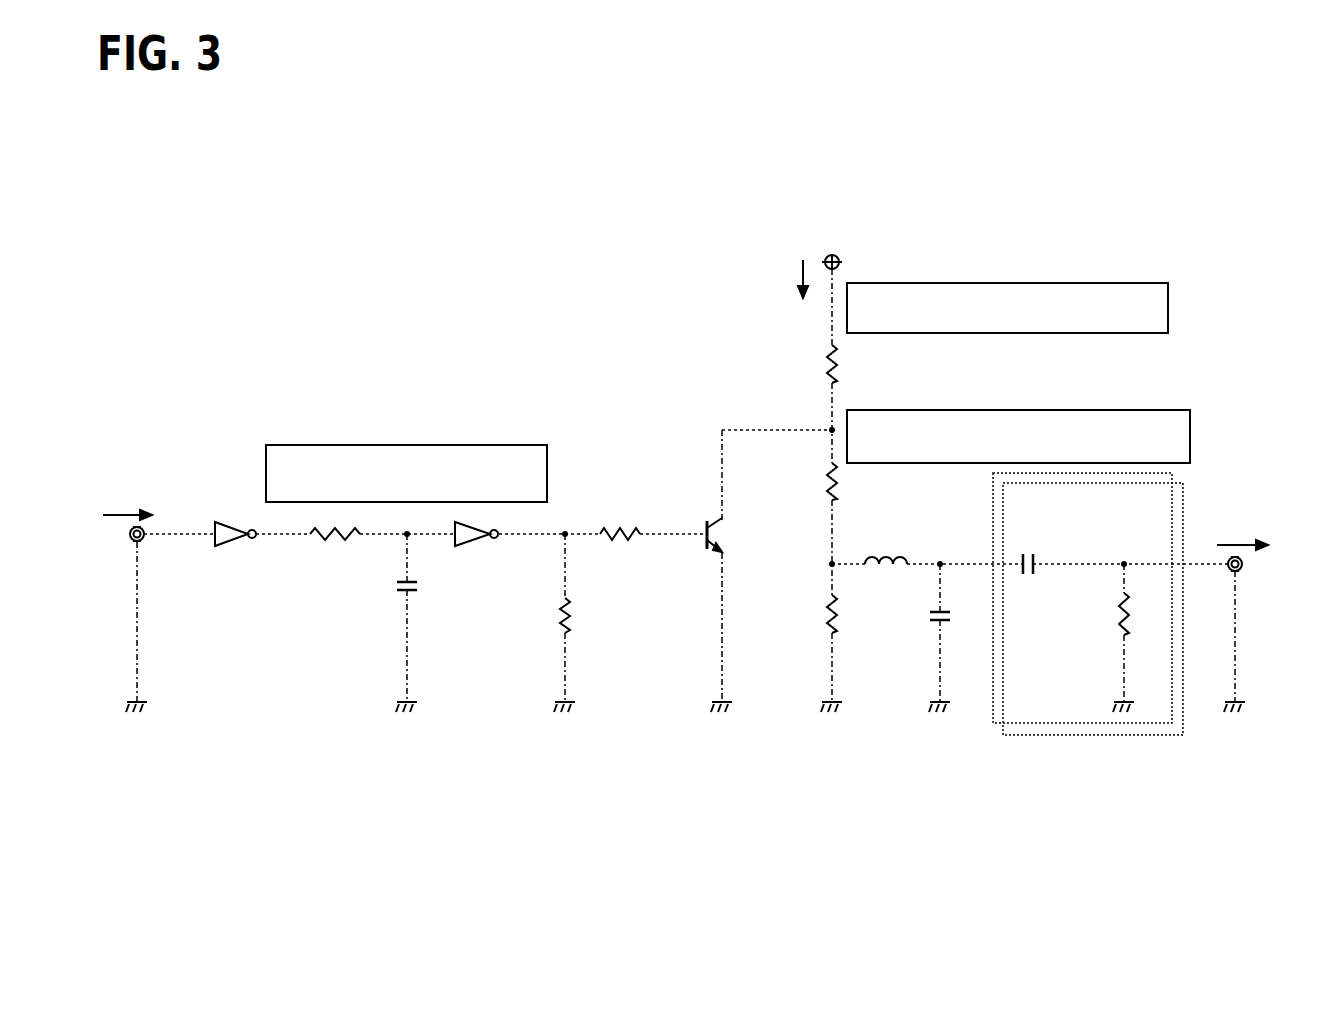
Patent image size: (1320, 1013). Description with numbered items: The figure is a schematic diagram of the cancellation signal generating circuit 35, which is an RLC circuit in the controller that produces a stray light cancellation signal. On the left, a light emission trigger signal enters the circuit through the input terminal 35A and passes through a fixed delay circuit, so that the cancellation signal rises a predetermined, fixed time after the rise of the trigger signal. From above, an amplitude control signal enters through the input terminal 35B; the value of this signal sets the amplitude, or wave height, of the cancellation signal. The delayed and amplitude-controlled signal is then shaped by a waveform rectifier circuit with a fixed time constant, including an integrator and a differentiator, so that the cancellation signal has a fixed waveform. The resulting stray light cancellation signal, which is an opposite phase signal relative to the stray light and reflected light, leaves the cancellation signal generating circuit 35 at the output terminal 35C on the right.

The cancellation signal generating circuit 35 is at (1162, 230).
The input terminal 35A is at (126, 533).
The input terminal 35B is at (833, 250).
The output terminal 35C is at (1243, 562).